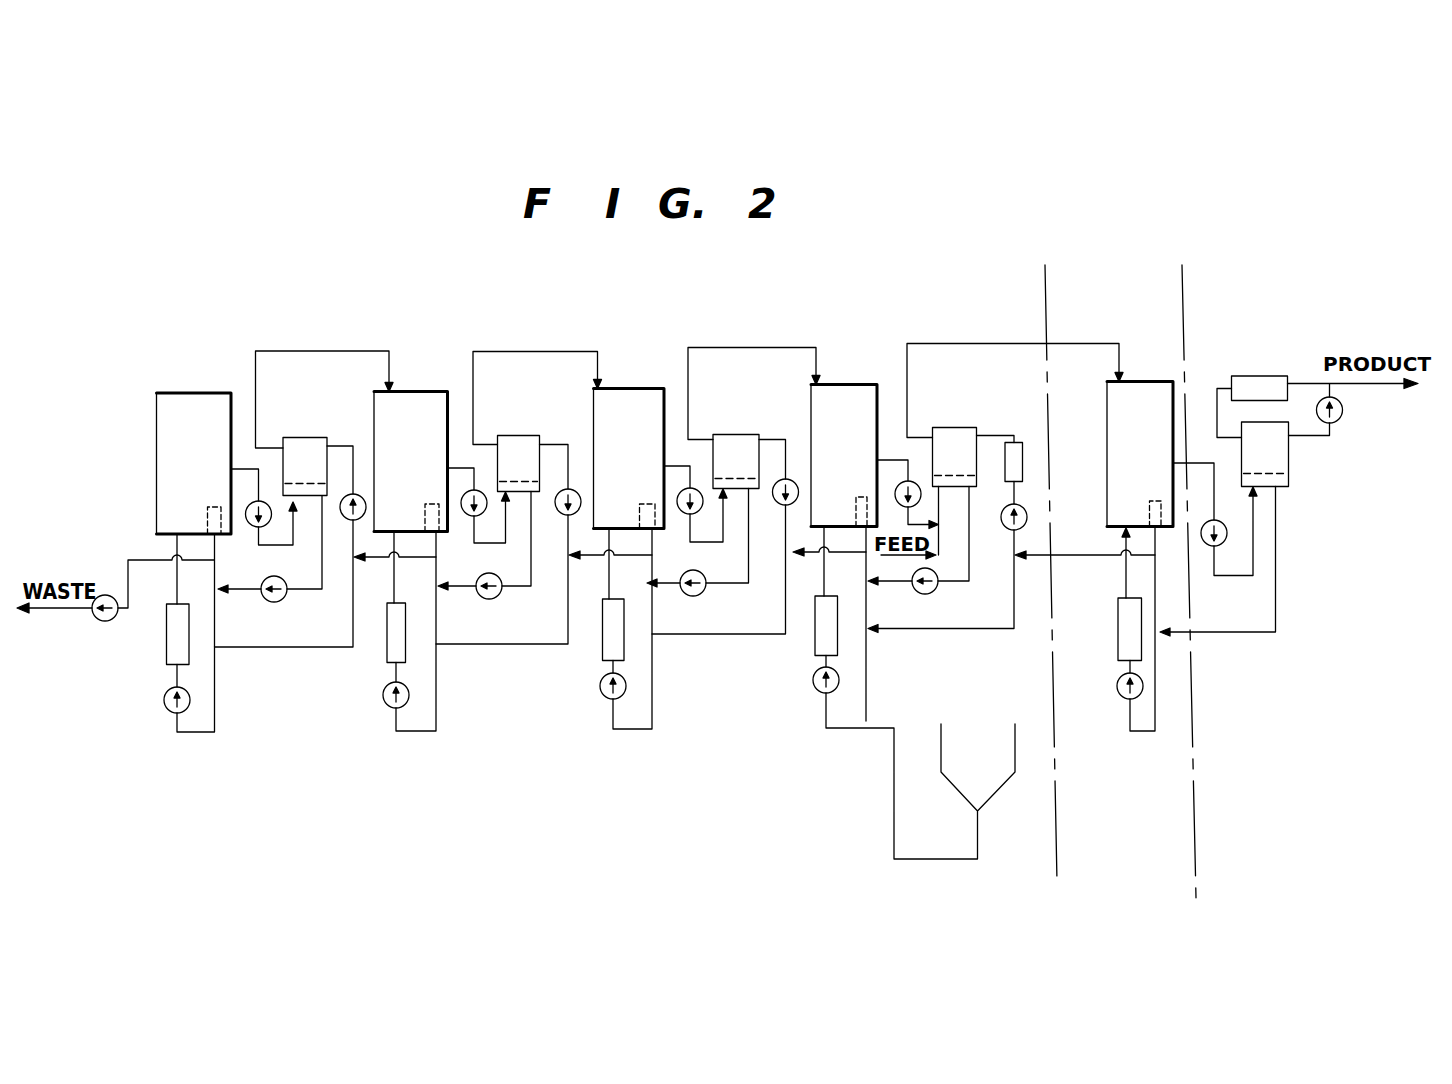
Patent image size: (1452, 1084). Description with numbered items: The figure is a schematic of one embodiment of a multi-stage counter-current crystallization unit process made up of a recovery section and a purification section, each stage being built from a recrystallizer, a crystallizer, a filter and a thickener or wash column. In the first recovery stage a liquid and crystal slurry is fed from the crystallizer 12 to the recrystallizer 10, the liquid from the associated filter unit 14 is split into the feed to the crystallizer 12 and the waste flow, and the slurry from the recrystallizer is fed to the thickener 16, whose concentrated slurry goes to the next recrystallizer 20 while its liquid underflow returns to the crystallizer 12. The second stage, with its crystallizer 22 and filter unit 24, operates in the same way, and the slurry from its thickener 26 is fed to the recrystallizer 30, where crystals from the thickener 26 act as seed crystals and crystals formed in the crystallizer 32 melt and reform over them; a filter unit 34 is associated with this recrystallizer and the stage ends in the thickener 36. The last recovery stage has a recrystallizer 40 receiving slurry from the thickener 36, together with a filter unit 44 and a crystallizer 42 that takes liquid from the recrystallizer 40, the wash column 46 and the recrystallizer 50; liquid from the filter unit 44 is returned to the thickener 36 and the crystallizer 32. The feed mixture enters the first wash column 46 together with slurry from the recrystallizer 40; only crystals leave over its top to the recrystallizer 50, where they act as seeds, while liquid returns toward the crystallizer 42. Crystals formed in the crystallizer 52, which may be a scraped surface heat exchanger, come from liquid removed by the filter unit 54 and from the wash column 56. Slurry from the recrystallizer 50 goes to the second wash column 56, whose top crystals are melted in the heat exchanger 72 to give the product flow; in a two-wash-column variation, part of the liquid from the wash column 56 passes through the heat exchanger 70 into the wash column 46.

The recrystallizer 10 is at (190, 393).
The crystallizer 12 is at (174, 640).
The filter unit 14 is at (212, 507).
The thickener 16 is at (313, 438).
The recrystallizer 20 is at (420, 392).
The crystallizer 22 is at (389, 644).
The filter unit 24 is at (430, 504).
The thickener 26 is at (532, 434).
The recrystallizer 30 is at (640, 388).
The crystallizer 32 is at (604, 644).
The filter unit 34 is at (646, 504).
The thickener 36 is at (750, 432).
The recrystallizer 40 is at (855, 384).
The crystallizer 42 is at (818, 640).
The filter unit 44 is at (860, 497).
The wash column 46 is at (966, 428).
The recrystallizer 50 is at (1152, 382).
The crystallizer 52 is at (1127, 637).
The filter unit 54 is at (1156, 501).
The wash column 56 is at (1288, 455).
The heat exchanger 70 is at (1023, 458).
The heat exchanger 72 is at (1258, 376).